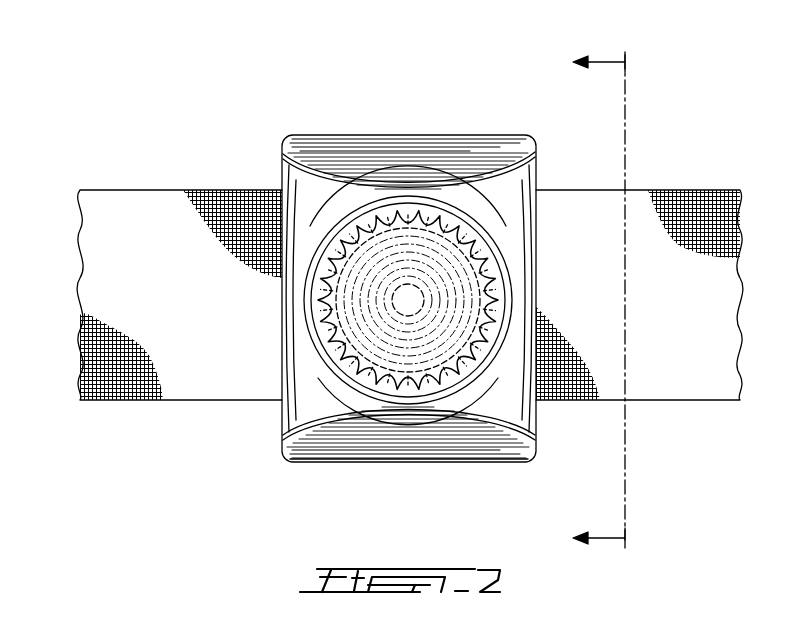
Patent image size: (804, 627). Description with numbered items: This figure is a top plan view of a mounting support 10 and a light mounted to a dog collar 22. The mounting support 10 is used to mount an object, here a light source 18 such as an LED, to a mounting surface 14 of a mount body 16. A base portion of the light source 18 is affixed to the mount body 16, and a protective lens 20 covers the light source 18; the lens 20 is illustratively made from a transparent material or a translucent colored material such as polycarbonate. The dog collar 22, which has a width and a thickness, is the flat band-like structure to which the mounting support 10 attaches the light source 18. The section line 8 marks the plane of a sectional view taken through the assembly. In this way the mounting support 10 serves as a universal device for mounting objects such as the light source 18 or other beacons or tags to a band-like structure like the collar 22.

The mounting support 10 is at (275, 125).
The mounting surface 14 is at (322, 402).
The mount body 16 is at (505, 462).
The light source 18 is at (418, 286).
The protective lens 20 is at (378, 240).
The dog collar 22 is at (146, 190).
The section line 8- 8 is at (610, 299).